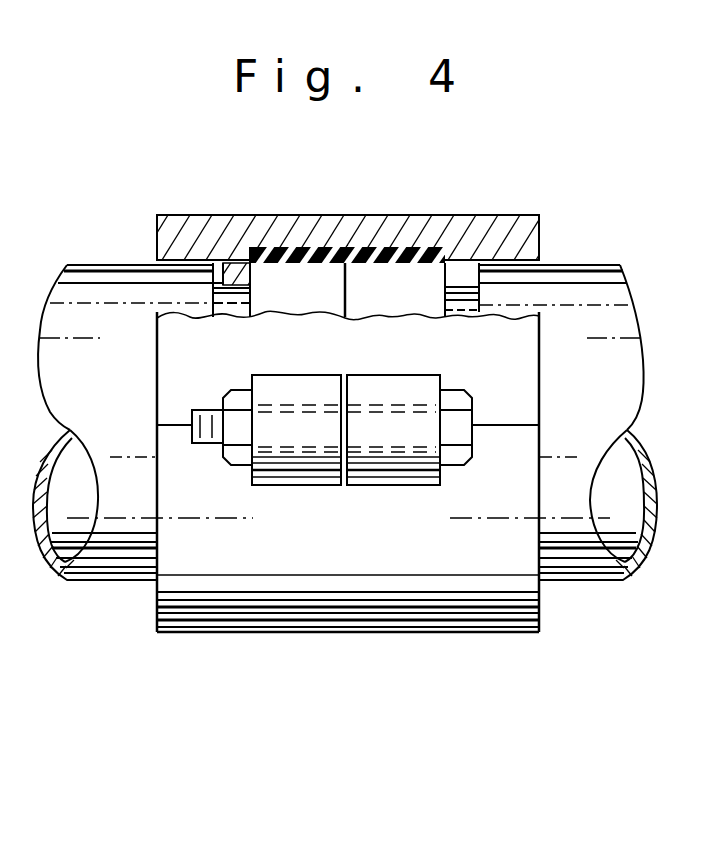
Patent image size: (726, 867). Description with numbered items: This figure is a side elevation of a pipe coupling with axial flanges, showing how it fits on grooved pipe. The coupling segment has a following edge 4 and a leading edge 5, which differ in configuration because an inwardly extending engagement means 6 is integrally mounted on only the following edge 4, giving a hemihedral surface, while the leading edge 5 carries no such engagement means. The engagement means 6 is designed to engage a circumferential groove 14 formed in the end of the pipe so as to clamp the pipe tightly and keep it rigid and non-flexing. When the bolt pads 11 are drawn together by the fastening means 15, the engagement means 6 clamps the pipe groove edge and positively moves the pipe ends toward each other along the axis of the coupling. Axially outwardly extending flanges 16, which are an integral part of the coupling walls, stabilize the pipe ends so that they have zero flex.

The following edge 4 is at (134, 210).
The leading edge 5 is at (566, 197).
The inwardly extending engagement means 6 is at (233, 278).
The bolt pad 11 is at (320, 462).
The circumferential groove 14 is at (223, 270).
The fastening means 15 is at (457, 423).
The axially outwardly extending flange 16 is at (180, 238).